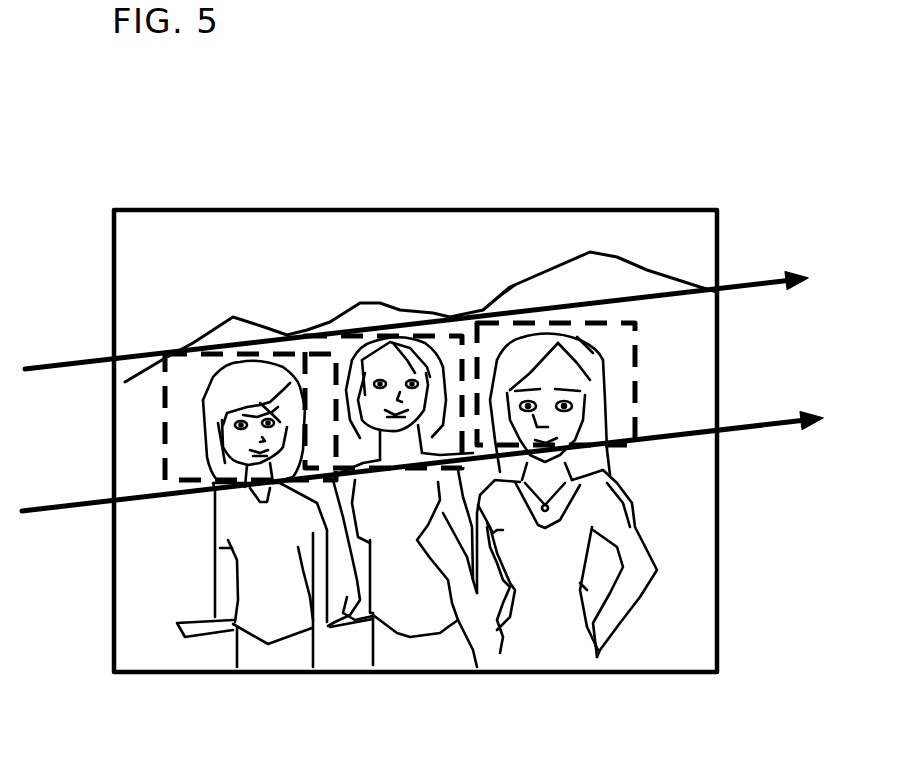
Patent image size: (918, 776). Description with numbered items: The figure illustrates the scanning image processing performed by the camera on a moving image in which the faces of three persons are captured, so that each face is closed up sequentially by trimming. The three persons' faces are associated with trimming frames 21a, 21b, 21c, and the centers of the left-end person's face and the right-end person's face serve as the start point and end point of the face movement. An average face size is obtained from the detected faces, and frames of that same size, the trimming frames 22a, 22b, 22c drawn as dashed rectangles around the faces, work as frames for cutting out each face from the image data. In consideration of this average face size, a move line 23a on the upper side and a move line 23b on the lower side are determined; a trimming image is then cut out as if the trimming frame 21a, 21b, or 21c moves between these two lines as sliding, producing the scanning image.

The trimming frame 21a is at (218, 372).
The trimming frame 21b is at (348, 360).
The trimming frame 21c is at (500, 350).
The trimming frame 22a is at (162, 414).
The trimming frame 22b is at (393, 333).
The trimming frame 22c is at (636, 375).
The move line on the upper side 23a is at (735, 281).
The move line on the lower side 23b is at (743, 432).